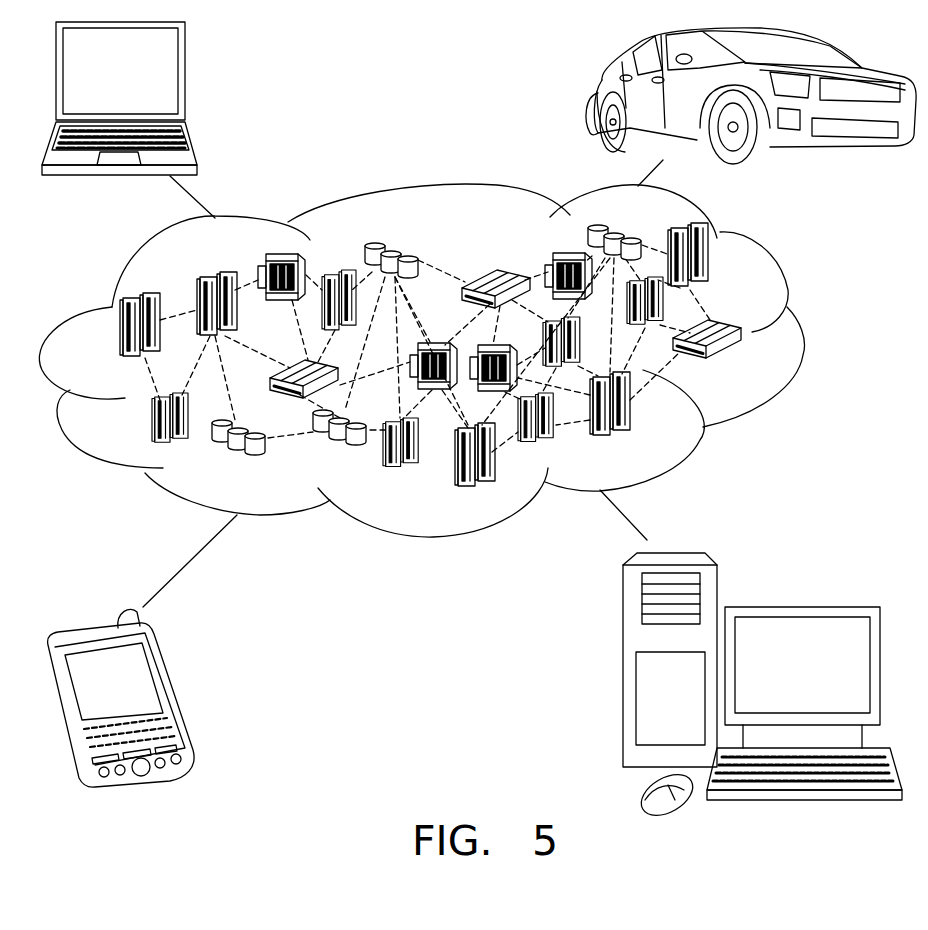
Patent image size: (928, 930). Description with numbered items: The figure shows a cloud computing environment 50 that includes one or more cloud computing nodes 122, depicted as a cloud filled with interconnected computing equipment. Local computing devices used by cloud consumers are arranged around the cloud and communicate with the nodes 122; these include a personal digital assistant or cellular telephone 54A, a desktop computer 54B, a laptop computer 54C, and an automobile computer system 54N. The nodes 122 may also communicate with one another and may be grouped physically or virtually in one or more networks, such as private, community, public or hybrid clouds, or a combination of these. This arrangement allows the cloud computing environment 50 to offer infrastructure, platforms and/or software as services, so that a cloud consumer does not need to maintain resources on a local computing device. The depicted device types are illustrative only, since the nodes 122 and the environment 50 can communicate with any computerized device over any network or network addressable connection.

The cloud computing environment 50 is at (803, 333).
The personal digital assistant or cellular telephone 54A is at (178, 690).
The desktop computer 54B is at (800, 605).
The laptop computer 54C is at (185, 80).
The automobile computer system 54N is at (595, 93).
The cloud computing node 122 is at (750, 363).